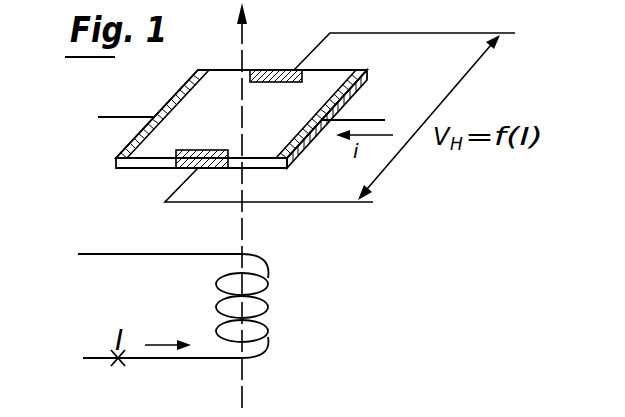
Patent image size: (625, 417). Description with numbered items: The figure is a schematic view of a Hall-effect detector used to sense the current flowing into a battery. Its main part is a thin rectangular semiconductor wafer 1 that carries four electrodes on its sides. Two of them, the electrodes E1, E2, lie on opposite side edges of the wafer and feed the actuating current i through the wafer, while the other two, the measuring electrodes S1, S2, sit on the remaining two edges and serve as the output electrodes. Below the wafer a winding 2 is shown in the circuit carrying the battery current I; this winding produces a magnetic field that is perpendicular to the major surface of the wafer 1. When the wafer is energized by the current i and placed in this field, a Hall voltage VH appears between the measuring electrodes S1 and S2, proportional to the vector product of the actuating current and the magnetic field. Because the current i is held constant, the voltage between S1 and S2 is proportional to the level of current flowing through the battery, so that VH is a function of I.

The semiconductor wafer 1 is at (217, 122).
The winding 2 is at (268, 316).
The electrode E1 is at (157, 111).
The electrode E2 is at (351, 100).
The measuring electrode S1 is at (270, 76).
The measuring electrode S2 is at (175, 170).